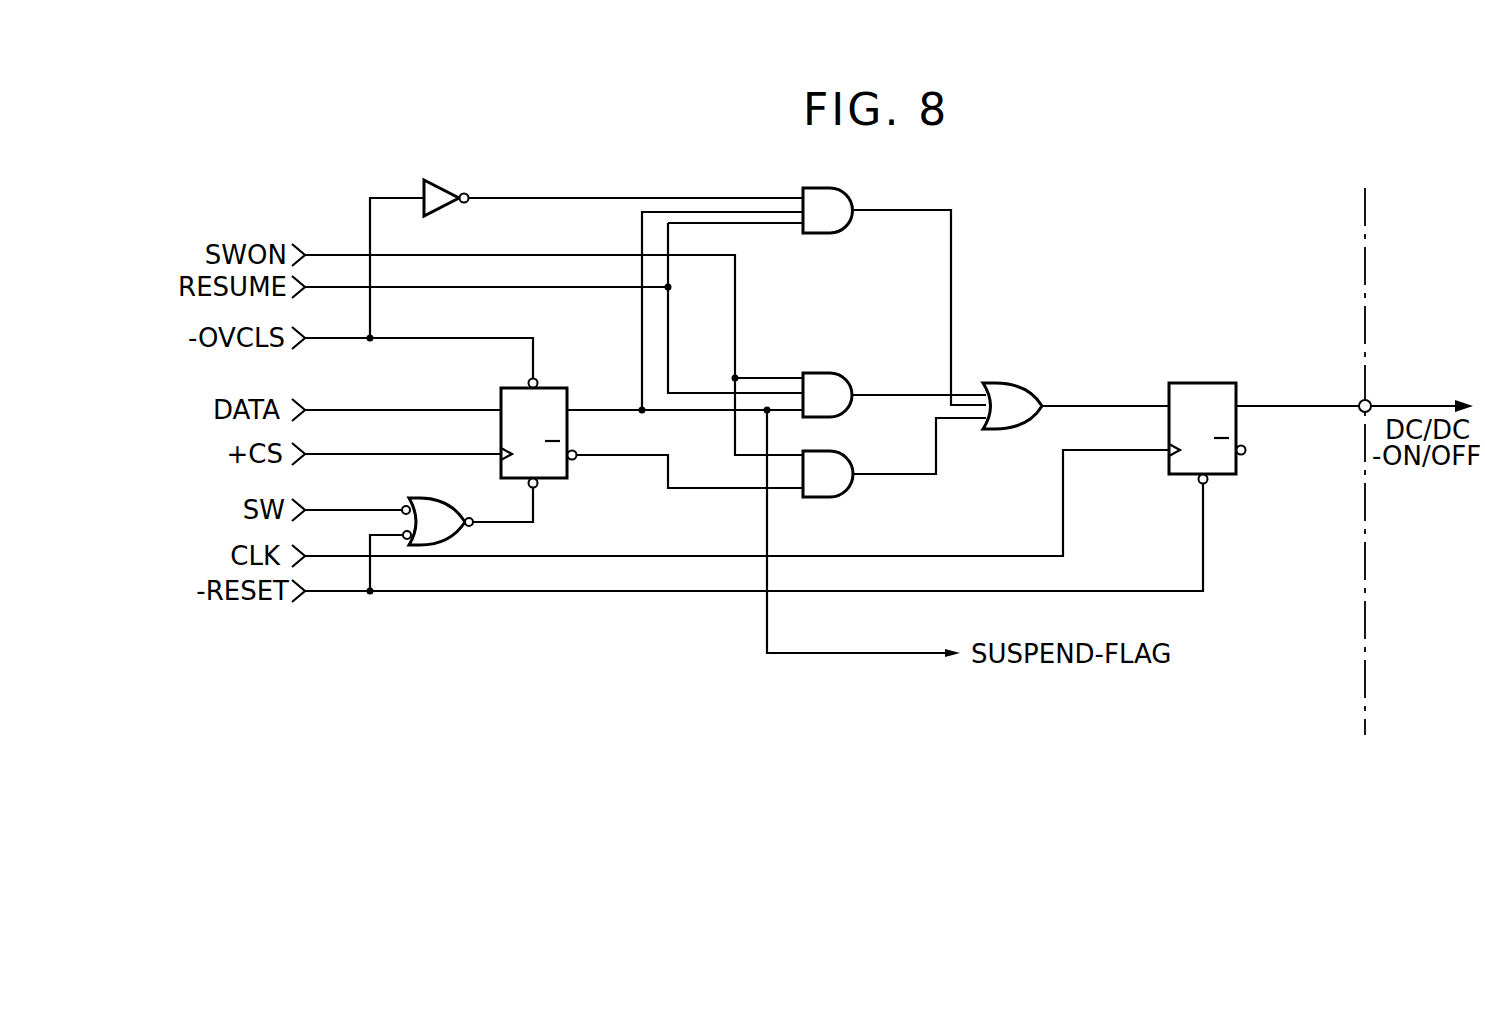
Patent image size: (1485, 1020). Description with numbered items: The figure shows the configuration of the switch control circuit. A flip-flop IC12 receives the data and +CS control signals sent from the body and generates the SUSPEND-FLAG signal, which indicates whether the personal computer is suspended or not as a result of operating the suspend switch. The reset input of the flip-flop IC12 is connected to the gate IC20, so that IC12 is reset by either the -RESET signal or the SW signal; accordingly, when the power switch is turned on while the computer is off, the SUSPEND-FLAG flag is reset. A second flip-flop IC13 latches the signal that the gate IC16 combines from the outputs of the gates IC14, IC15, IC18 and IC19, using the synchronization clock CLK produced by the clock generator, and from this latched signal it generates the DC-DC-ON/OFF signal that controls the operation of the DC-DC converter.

The flip-flop IC12 is at (553, 385).
The flip-flop IC13 is at (1208, 382).
The gate IC14 is at (838, 373).
The gate IC15 is at (842, 451).
The gate IC16 is at (1010, 382).
The gate IC18 is at (833, 185).
The gate IC19 is at (438, 183).
The gate IC20 is at (428, 498).